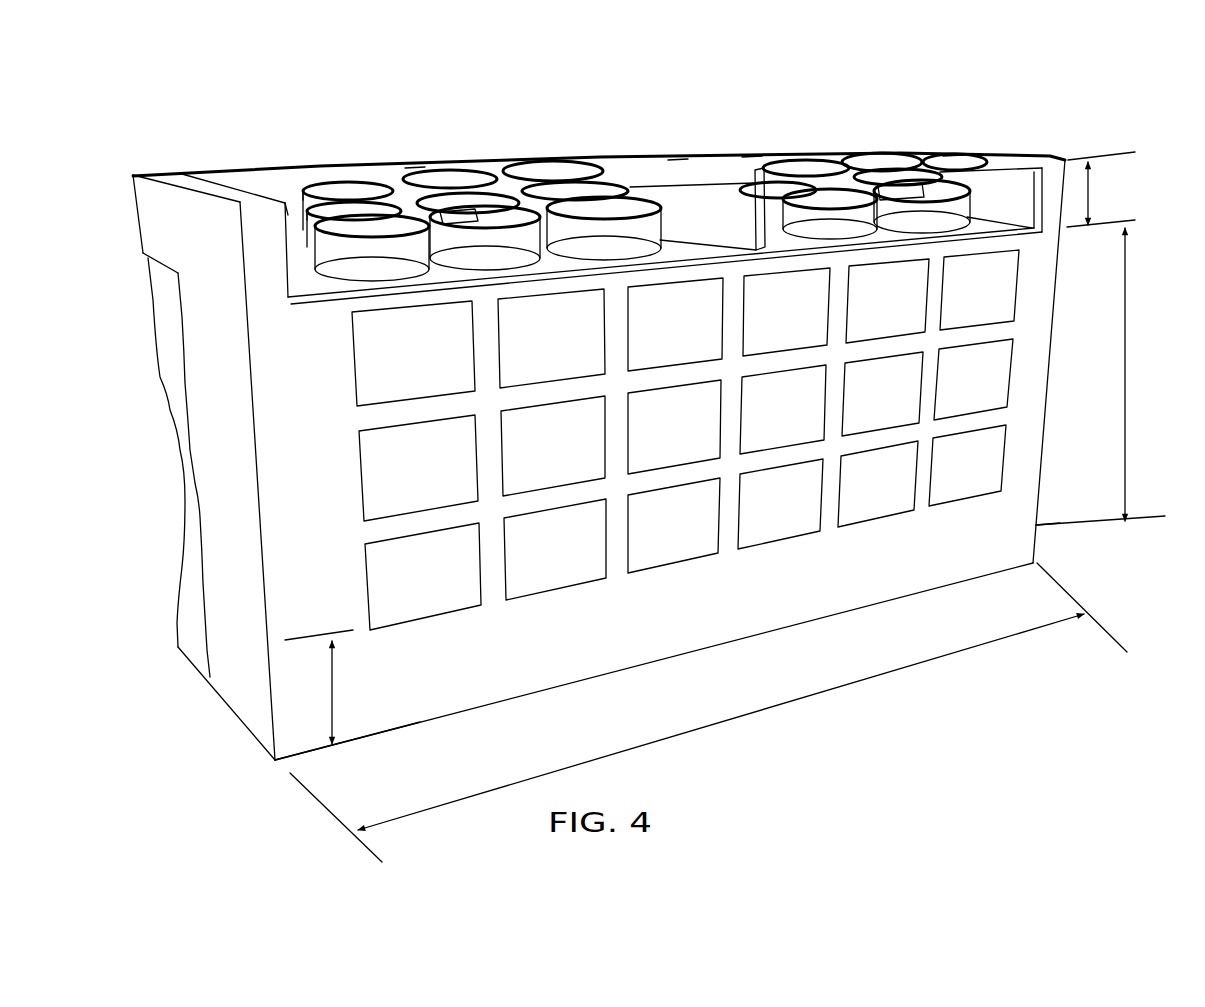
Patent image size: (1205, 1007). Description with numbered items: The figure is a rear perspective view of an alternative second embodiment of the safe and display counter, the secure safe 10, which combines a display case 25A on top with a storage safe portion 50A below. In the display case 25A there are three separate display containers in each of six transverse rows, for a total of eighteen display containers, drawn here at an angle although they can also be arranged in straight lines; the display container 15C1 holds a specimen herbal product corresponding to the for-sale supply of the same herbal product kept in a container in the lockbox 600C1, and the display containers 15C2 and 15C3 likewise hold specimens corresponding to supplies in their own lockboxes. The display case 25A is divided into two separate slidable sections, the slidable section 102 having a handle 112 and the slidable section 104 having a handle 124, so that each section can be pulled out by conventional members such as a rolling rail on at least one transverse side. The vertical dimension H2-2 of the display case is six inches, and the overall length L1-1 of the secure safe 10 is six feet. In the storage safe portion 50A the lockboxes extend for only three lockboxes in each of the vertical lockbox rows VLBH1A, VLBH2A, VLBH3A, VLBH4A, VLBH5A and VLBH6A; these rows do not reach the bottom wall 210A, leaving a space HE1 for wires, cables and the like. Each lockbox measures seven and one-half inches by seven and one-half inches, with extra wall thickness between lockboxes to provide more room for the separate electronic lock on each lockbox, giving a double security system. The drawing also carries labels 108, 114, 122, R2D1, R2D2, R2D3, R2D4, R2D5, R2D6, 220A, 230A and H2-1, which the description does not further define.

The secure safe 10 is at (640, 150).
The slidable section 102 is at (399, 147).
The slidable section 104 is at (754, 152).
The divider plate 108 is at (753, 163).
The handle 112 is at (469, 214).
The cell with tab 114 is at (898, 188).
The tray side wall 122 is at (288, 184).
The handle 124 is at (802, 166).
The display container 15C1 is at (323, 196).
The display container 15C2 is at (346, 207).
The display container 15C3 is at (318, 250).
The second row distance 1 R2D1 is at (296, 211).
The second row distance 2 R2D2 is at (414, 160).
The second row distance 3 R2D3 is at (609, 171).
The second row distance 4 R2D4 is at (677, 154).
The second row distance 5 R2D5 is at (751, 152).
The second row distance 6 R2D6 is at (952, 153).
The display case 25A is at (1095, 145).
The storage safe portion 50A is at (1054, 394).
The lower edge 220A is at (1042, 497).
The side wall 230A is at (265, 626).
The bottom wall 210A is at (389, 736).
The height H2-1 is at (1113, 376).
The vertical dimension of display case H2-2 is at (1113, 189).
The space HE1 is at (317, 687).
The length L1-1 is at (708, 712).
The lockbox 600C1 is at (448, 373).
The vertical lockbox row VLBH1A is at (423, 623).
The vertical lockbox row VLBH2A is at (563, 592).
The vertical lockbox row VLBH3A is at (678, 567).
The vertical lockbox row VLBH4A is at (776, 542).
The vertical lockbox row VLBH5A is at (883, 522).
The vertical lockbox row VLBH6A is at (974, 500).